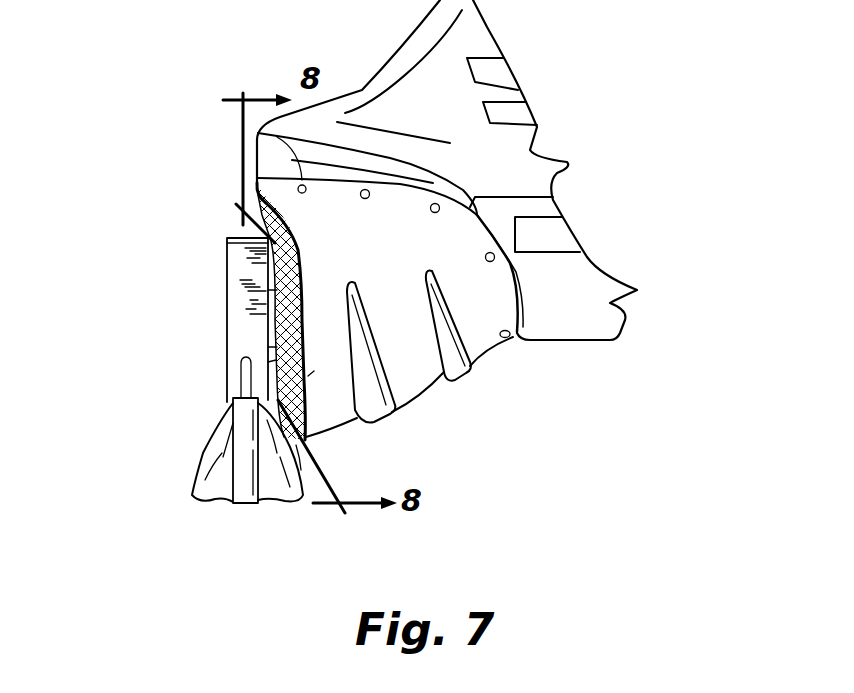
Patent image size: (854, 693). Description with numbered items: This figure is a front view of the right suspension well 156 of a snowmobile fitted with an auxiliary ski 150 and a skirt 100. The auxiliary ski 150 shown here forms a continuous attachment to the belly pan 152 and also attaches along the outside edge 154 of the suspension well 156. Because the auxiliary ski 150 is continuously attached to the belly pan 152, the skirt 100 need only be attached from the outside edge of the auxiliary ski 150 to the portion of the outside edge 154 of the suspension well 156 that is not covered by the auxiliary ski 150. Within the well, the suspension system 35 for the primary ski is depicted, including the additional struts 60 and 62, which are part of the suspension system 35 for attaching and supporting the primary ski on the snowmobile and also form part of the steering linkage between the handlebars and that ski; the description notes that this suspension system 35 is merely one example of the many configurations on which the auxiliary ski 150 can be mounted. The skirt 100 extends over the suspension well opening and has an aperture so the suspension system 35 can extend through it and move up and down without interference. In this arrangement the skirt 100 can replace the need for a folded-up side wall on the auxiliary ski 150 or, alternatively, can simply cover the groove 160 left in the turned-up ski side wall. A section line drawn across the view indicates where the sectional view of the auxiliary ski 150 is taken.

The suspension system 35 is at (222, 205).
The strut 60 is at (240, 388).
The strut 62 is at (278, 350).
The skirt 100 is at (268, 218).
The auxiliary ski 150 is at (417, 393).
The belly pan 152 is at (520, 343).
The outside edge 154 is at (277, 137).
The suspension well 156 is at (208, 316).
The groove 160 is at (303, 275).